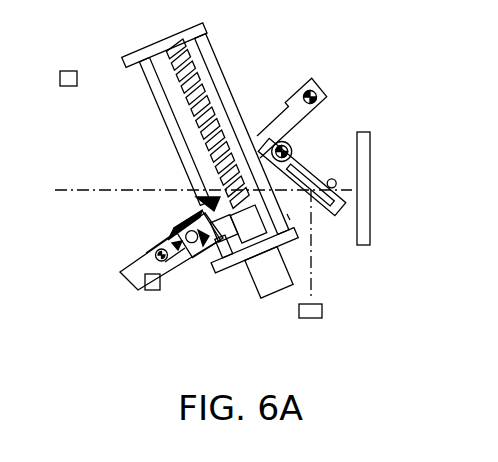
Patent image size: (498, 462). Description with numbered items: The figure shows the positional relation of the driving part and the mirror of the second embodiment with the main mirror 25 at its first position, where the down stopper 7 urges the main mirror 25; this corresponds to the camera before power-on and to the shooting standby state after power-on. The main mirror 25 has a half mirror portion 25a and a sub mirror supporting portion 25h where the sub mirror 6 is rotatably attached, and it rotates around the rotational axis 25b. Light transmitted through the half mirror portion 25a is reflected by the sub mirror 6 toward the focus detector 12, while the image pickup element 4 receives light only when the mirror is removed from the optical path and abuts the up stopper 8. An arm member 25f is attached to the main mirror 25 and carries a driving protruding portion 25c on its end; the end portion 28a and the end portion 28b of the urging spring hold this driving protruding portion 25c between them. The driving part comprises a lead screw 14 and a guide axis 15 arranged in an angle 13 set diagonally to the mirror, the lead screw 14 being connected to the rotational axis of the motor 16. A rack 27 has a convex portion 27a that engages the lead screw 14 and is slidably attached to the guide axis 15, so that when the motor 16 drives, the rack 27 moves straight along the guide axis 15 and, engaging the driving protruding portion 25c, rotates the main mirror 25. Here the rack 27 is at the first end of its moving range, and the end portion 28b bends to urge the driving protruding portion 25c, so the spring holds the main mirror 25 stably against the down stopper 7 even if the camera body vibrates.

The image pickup element 4 is at (370, 196).
The sub mirror 6 is at (311, 163).
The down stopper 7 is at (150, 297).
The up stopper 8 is at (67, 71).
The focus detector 12 is at (323, 311).
The angle 13 is at (211, 54).
The lead screw 14 is at (210, 97).
The guide axis 15 is at (140, 89).
The motor 16 is at (274, 300).
The main mirror 25 is at (119, 268).
The half mirror portion 25a is at (153, 244).
The rotational axis 25b is at (317, 82).
The driving protruding portion 25c is at (175, 256).
The arm member 25f is at (168, 236).
The sub mirror supporting portion 25h is at (287, 141).
The rack 27 is at (212, 255).
The convex portion 27a is at (287, 217).
The end portion 28a is at (177, 210).
The end portion 28b is at (196, 250).